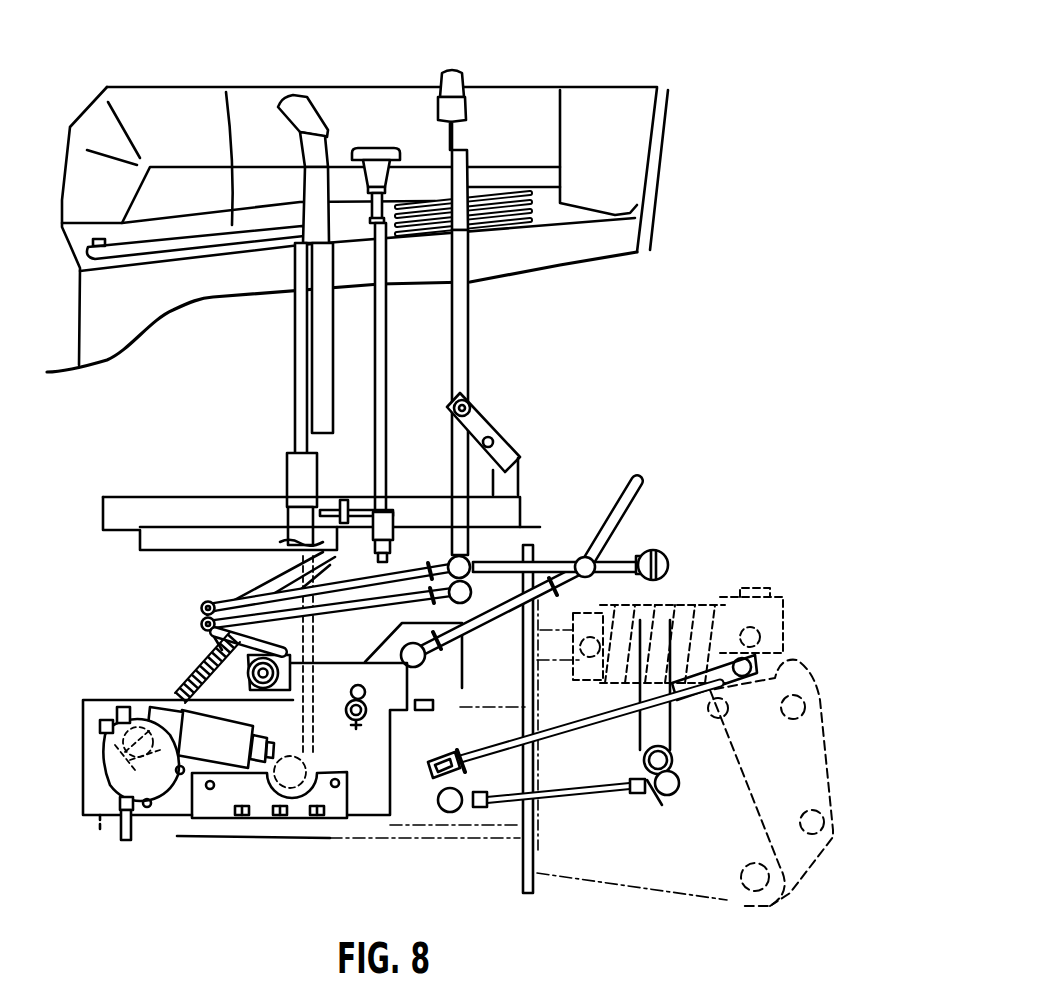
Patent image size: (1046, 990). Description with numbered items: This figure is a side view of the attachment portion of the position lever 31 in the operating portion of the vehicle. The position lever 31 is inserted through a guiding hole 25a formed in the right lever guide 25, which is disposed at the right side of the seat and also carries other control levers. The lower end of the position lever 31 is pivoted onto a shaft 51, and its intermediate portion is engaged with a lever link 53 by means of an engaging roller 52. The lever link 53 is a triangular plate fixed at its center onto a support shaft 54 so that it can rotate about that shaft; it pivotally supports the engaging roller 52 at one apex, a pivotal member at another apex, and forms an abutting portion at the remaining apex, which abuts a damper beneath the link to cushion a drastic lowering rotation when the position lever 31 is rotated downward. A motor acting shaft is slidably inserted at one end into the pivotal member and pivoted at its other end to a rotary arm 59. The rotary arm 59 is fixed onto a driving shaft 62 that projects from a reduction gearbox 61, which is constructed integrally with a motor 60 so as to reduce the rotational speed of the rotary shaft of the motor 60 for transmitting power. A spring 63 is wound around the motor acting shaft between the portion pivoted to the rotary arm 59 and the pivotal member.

The right lever guide 25 is at (153, 307).
The guiding hole 25a is at (226, 92).
The position lever 31 is at (310, 110).
The shaft 51 is at (311, 818).
The engaging roller 52 is at (350, 700).
The lever link 53 is at (217, 648).
The support shaft 54 is at (248, 673).
The rotary arm 59 is at (103, 757).
The motor 60 is at (225, 757).
The reduction gearbox 61 is at (152, 788).
The driving shaft 62 is at (99, 818).
The spring 63 is at (180, 688).